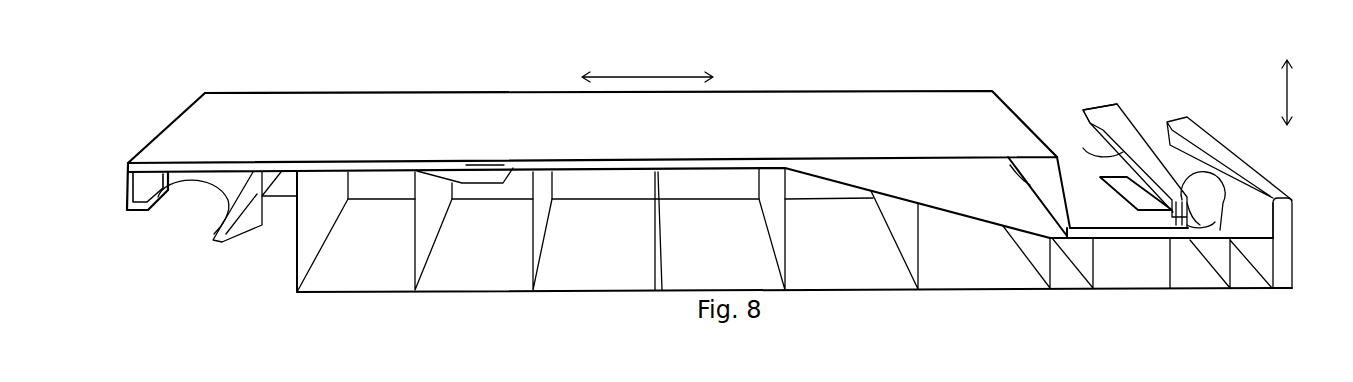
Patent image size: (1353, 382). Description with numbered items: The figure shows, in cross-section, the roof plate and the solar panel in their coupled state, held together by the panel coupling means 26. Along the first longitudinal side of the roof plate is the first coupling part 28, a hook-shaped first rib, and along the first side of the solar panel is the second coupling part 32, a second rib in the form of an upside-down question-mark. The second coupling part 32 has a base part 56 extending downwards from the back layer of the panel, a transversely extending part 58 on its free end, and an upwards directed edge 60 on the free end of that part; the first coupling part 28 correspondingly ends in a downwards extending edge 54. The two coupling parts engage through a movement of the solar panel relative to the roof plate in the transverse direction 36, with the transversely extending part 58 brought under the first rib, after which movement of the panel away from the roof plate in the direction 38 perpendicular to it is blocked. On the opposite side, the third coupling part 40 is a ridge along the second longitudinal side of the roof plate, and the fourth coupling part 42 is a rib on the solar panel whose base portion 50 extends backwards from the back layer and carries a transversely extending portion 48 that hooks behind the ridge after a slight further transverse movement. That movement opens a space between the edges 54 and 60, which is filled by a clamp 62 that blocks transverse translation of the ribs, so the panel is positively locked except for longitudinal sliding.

The panel coupling means 26 is at (142, 265).
The first coupling part 28 is at (1239, 227).
The second coupling part 32 is at (1078, 160).
The transverse direction 36 is at (635, 73).
The direction perpendicular to the roof plate 38 is at (1317, 92).
The third coupling part 40 is at (157, 176).
The fourth coupling part 42 is at (112, 219).
The transversely extending portion 48 is at (155, 203).
The base portion 50 is at (125, 177).
The downwards extending edge 54 is at (1085, 148).
The base part 56 is at (1058, 172).
The transversely extending part 58 is at (1115, 229).
The upwards directed edge 60 is at (1225, 230).
The clamp 62 is at (1133, 196).